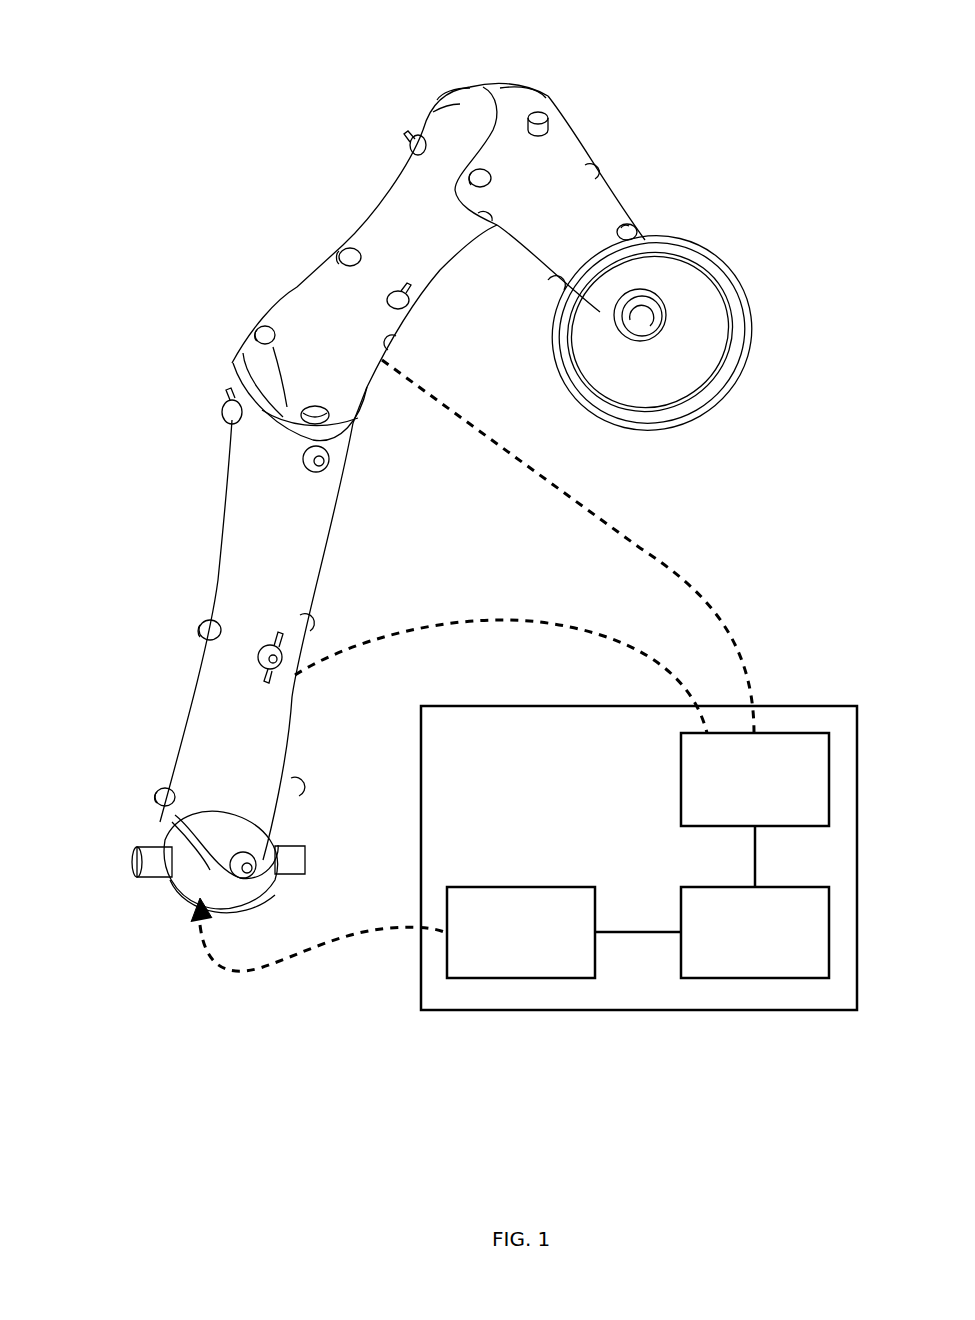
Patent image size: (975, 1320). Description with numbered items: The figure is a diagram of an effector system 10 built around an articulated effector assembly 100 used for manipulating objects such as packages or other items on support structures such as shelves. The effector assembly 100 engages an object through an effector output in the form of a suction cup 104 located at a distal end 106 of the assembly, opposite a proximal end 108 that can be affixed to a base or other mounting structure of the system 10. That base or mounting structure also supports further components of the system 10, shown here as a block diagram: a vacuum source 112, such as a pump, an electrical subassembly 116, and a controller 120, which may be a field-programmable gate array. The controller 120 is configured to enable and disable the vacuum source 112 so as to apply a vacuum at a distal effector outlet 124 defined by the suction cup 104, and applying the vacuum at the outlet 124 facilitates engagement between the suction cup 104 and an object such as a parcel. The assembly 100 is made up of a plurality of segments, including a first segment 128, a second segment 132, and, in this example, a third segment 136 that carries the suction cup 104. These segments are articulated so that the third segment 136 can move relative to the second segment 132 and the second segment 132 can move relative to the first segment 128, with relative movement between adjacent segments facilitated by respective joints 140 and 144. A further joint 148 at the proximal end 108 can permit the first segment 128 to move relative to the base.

The effector system 10 is at (303, 1075).
The effector assembly 100 is at (402, 481).
The suction cup 104 is at (694, 332).
The distal end 106 is at (642, 233).
The proximal end 108 is at (130, 827).
The vacuum source 112 is at (521, 932).
The electrical subassembly 116 is at (755, 779).
The controller 120 is at (755, 932).
The distal effector outlet 124 is at (637, 315).
The first segment 128 is at (225, 590).
The second segment 132 is at (292, 287).
The third segment 136 is at (598, 200).
The joint 140 is at (255, 360).
The joint 144 is at (485, 90).
The further joint 148 is at (180, 900).